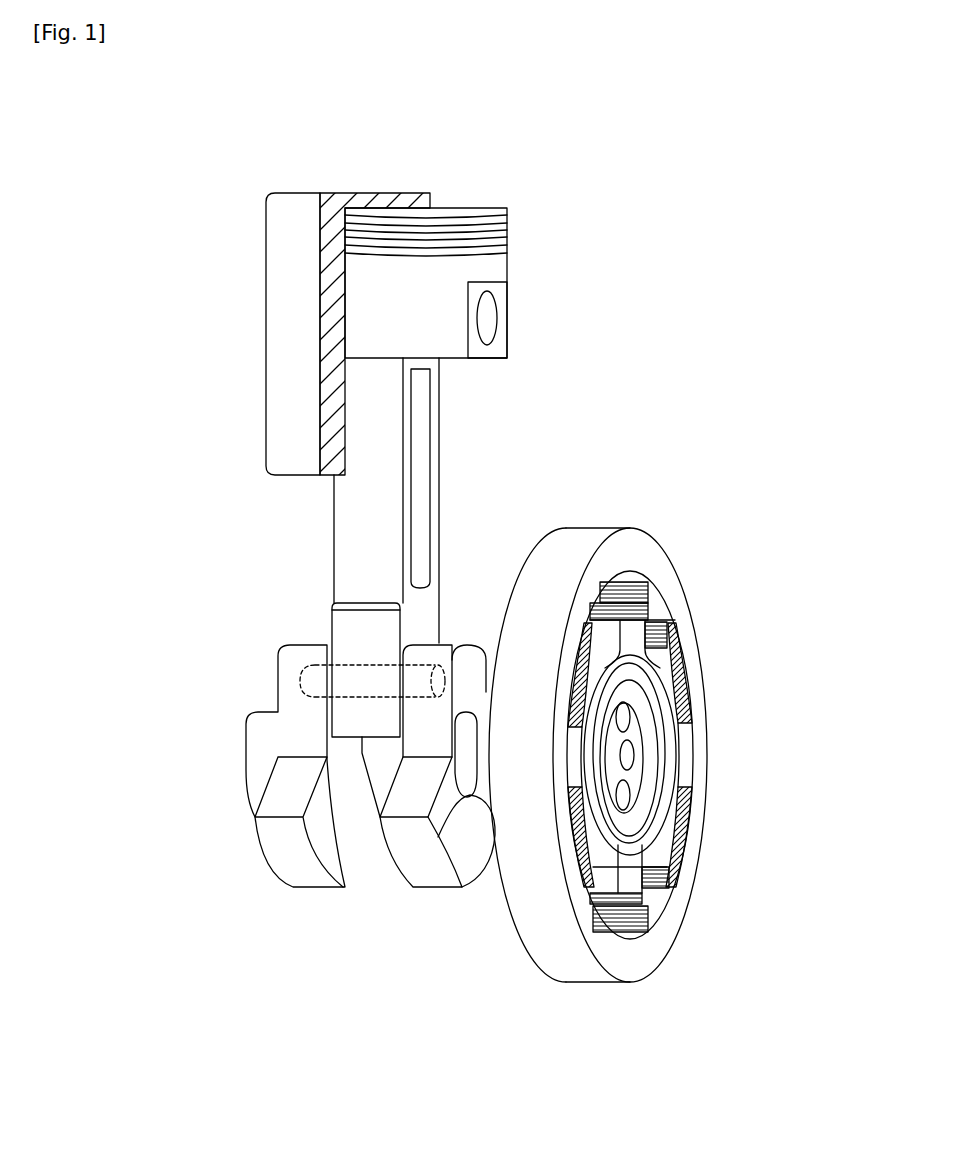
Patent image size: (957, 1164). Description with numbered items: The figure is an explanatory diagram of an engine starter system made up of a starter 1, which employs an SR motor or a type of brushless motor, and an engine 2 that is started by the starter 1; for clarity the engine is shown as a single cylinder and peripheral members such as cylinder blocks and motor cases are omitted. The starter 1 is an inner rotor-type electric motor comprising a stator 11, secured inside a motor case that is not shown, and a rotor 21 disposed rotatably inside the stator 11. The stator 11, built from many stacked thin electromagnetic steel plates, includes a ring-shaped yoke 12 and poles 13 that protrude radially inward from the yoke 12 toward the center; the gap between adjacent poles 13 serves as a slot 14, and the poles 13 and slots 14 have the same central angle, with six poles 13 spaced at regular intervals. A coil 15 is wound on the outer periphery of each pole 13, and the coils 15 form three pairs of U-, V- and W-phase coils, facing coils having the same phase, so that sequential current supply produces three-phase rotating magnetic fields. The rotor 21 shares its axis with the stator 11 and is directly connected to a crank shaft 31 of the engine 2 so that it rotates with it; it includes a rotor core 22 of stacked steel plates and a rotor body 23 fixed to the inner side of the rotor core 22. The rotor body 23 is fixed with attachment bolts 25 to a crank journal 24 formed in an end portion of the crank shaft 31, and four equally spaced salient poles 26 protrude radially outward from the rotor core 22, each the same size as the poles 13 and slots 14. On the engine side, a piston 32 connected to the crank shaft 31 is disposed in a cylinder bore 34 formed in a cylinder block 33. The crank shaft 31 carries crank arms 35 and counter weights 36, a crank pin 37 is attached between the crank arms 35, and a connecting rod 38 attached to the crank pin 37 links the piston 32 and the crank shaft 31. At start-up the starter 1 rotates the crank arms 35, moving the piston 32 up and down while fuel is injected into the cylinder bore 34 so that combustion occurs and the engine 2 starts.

The starter 1 is at (680, 512).
The engine 2 is at (222, 247).
The stator 11 is at (545, 950).
The yoke 12 is at (675, 597).
The poles 13 is at (663, 827).
The slot 14 is at (685, 760).
The coil 15 is at (683, 667).
The rotor 21 is at (645, 848).
The rotor core 22 is at (603, 828).
The rotor body 23 is at (620, 843).
The crank journal 24 is at (480, 790).
The attachment bolts 25 is at (630, 793).
The salient poles 26 is at (628, 580).
The crank shaft 31 is at (257, 775).
The piston 32 is at (497, 267).
The cylinder block 33 is at (290, 357).
The cylinder bore 34 is at (348, 392).
The crank arms 35 is at (285, 682).
The counter weights 36 is at (288, 862).
The crank pin 37 is at (315, 677).
The connecting rod 38 is at (353, 503).